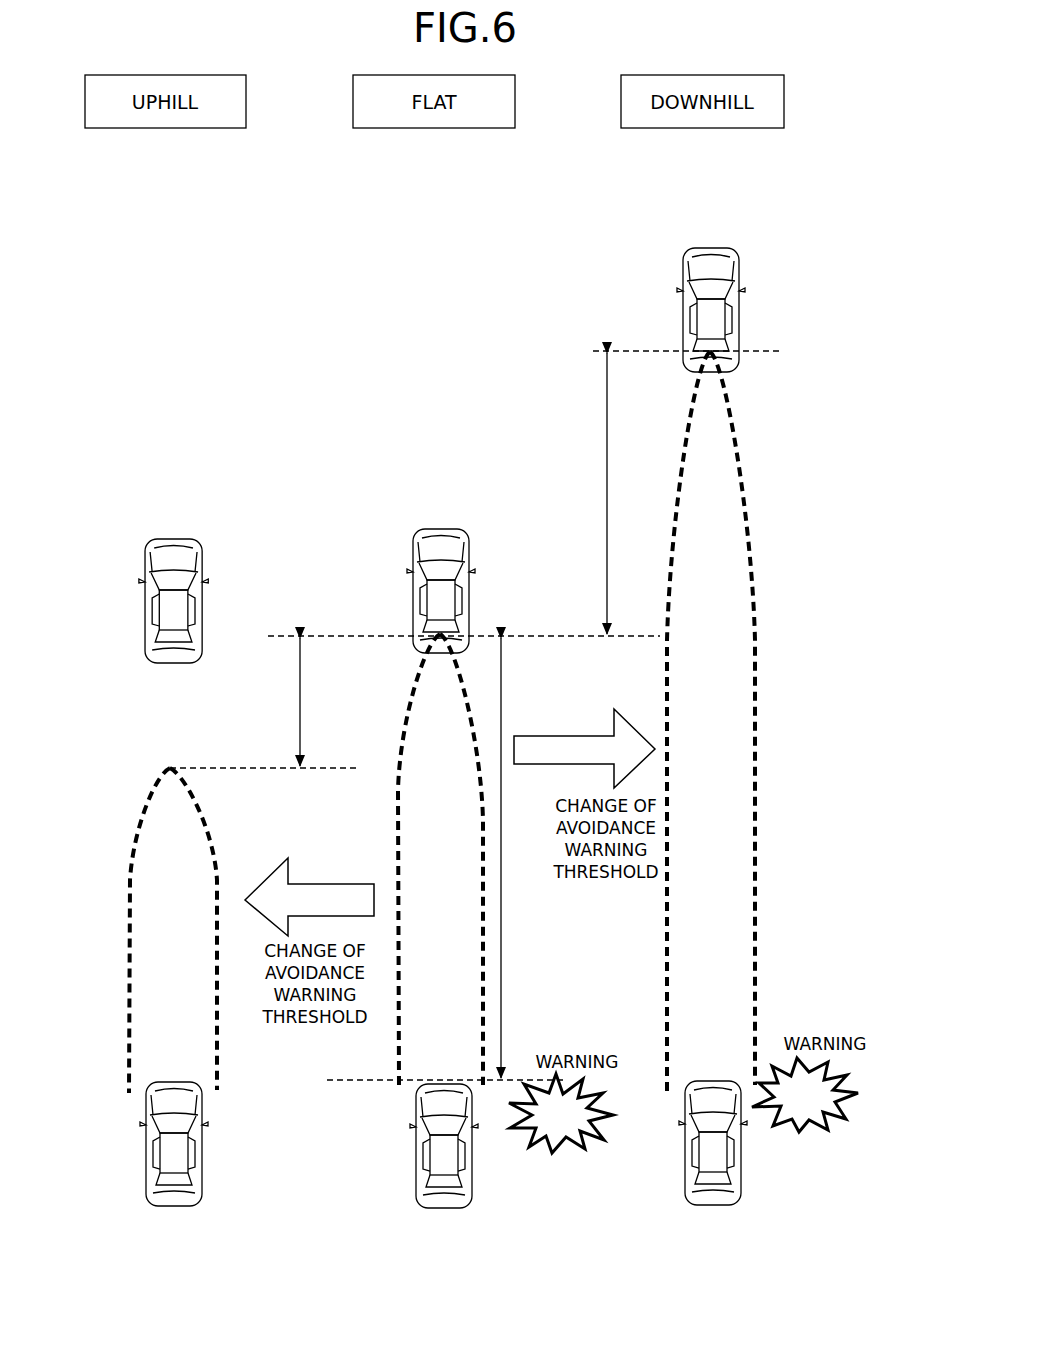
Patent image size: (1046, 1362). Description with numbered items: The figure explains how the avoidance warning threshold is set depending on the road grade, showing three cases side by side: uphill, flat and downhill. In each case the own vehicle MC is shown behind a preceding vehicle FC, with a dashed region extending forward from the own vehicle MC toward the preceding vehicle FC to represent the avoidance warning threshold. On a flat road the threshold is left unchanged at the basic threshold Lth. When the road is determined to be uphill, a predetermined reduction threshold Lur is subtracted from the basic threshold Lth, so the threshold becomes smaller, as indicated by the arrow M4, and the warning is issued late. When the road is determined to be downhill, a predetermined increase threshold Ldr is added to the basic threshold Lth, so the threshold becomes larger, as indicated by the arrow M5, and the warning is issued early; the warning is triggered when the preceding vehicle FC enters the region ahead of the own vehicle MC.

The preceding vehicle FC is at (180, 572).
The own vehicle MC is at (194, 1182).
The reduction threshold Lur is at (322, 702).
The increase threshold Ldr is at (629, 493).
The basic threshold Lth is at (523, 858).
The arrow M4 is at (313, 880).
The arrow M5 is at (545, 735).